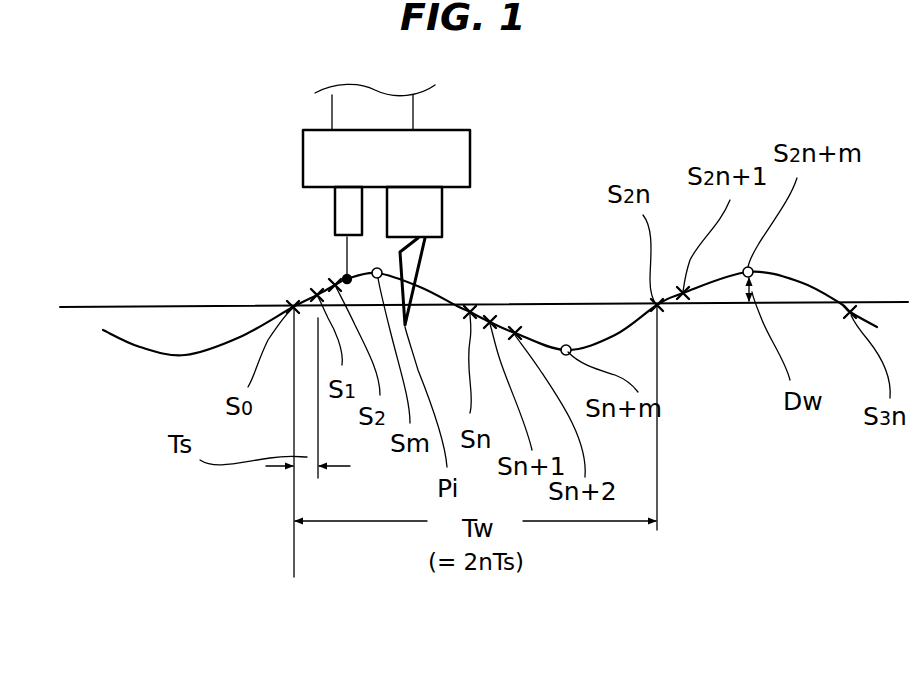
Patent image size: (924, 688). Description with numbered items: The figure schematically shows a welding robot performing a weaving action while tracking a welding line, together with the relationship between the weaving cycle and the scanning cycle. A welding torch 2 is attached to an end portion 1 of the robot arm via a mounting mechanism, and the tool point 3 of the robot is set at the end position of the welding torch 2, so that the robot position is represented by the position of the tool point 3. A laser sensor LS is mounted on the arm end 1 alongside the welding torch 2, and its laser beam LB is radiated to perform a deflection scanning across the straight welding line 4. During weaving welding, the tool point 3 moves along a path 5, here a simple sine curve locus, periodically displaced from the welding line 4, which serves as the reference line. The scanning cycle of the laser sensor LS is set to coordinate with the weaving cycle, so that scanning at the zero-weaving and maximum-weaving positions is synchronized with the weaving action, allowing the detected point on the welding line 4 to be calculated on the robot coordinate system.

The end portion of robot arm 1 is at (302, 160).
The welding torch 2 is at (336, 215).
The tool point 3 is at (343, 276).
The welding line 4 is at (118, 304).
The path 5 is at (156, 351).
The laser sensor LS is at (443, 205).
The laser beam LB is at (427, 265).